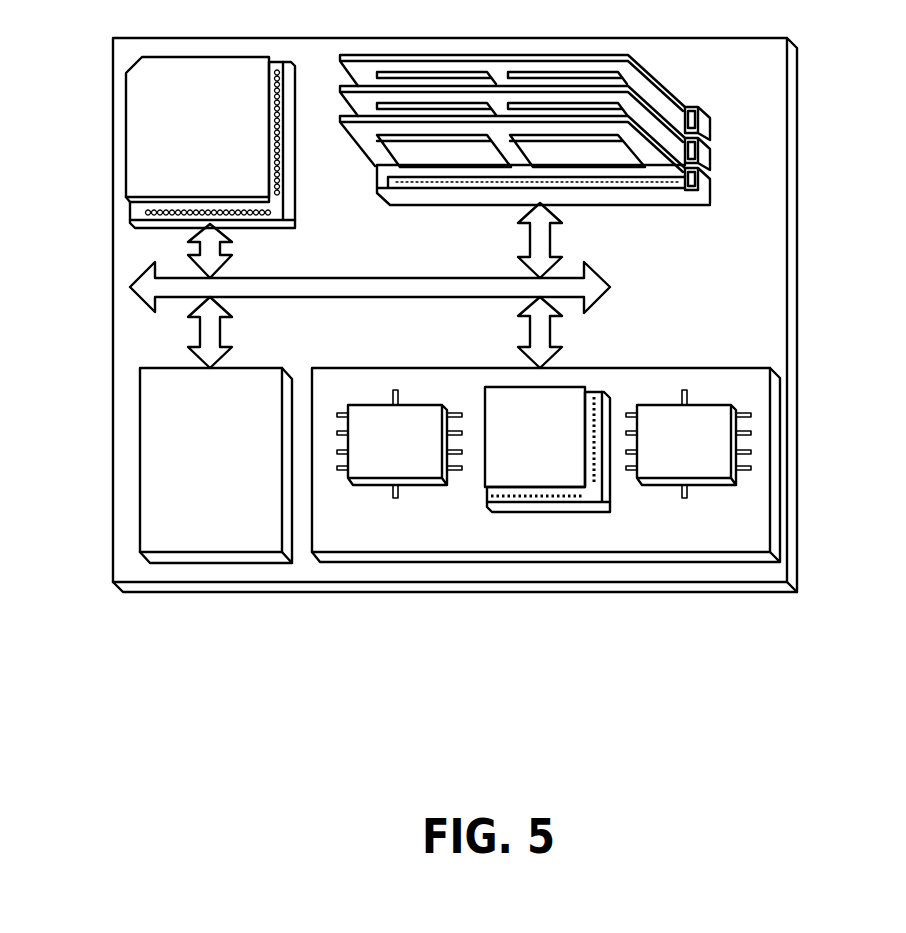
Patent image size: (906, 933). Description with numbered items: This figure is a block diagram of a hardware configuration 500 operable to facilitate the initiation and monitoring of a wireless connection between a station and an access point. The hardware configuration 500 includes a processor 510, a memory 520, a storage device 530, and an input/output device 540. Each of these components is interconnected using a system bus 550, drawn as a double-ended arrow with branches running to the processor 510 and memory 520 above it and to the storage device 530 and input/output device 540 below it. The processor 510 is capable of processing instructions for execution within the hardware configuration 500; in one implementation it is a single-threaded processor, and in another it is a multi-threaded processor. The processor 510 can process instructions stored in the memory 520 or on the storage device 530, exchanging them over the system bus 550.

The hardware configuration 500 is at (91, 701).
The processor 510 is at (255, 191).
The memory 520 is at (676, 96).
The storage device 530 is at (267, 547).
The input/output device 540 is at (732, 368).
The system bus 550 is at (363, 298).